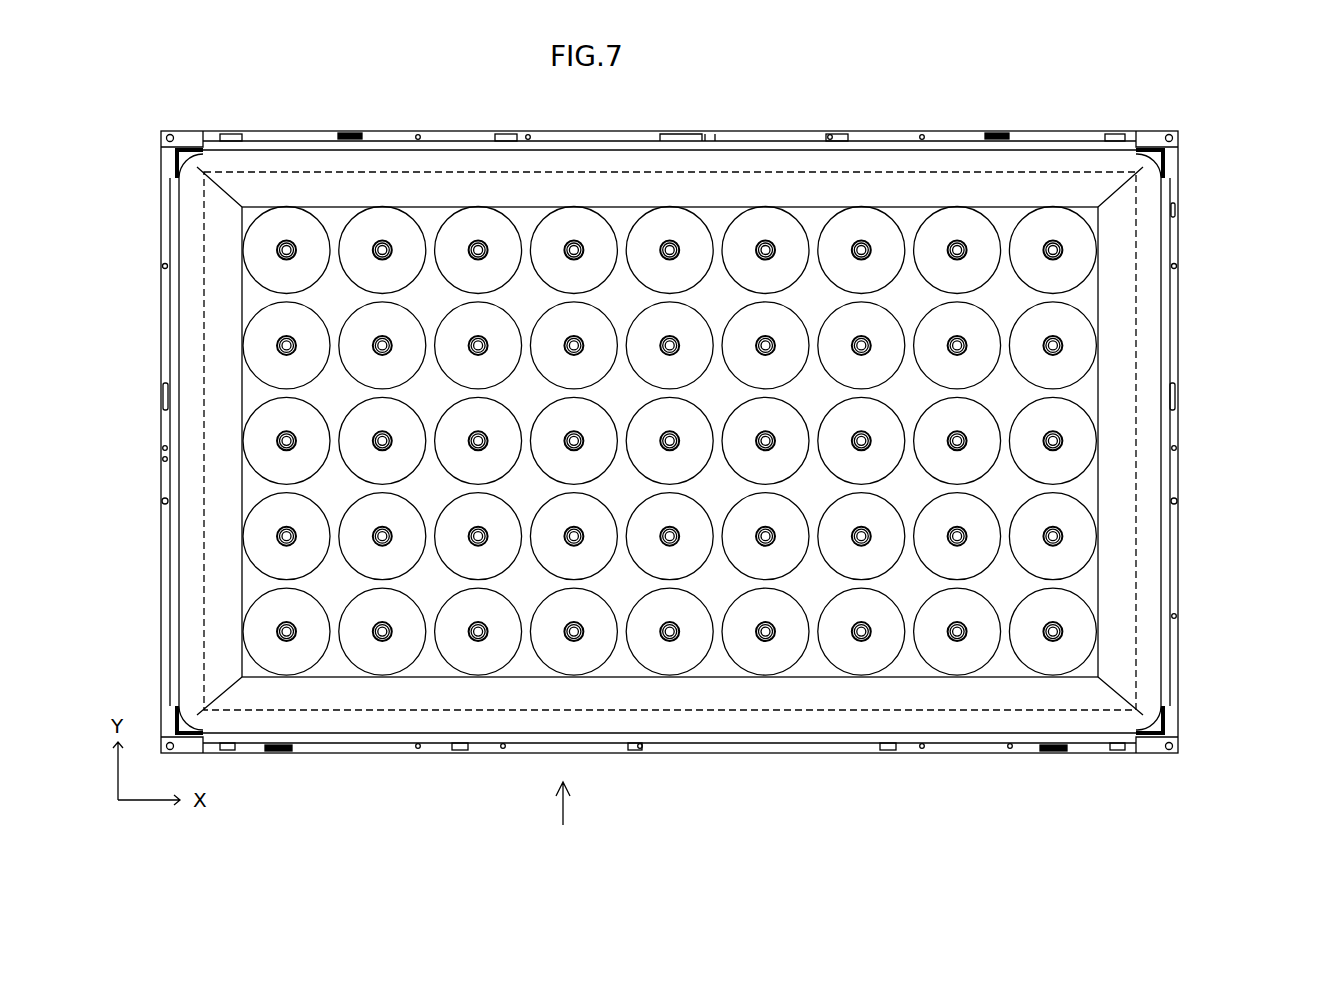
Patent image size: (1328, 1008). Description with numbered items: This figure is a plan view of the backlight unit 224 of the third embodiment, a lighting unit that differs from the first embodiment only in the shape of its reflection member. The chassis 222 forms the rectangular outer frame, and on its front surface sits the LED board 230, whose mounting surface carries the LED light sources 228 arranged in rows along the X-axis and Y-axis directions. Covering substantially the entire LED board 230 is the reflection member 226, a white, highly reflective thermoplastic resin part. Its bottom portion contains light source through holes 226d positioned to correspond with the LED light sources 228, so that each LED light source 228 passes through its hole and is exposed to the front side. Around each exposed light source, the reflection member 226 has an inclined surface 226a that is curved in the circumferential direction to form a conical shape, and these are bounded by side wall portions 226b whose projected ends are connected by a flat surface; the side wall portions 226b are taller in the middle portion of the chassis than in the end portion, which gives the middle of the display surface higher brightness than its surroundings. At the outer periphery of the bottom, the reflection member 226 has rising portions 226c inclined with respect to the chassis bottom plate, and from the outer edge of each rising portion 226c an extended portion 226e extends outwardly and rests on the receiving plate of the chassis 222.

The chassis 222 is at (1180, 645).
The backlight unit 224 is at (564, 826).
The reflection member 226 is at (1152, 142).
The inclined surface 226a is at (407, 645).
The side wall portion 226b is at (330, 295).
The rising portion 226c is at (682, 160).
The light source through hole 226d is at (478, 636).
The extended portion 226e is at (750, 143).
The LED light source 228 is at (287, 634).
The LED board 230 is at (225, 170).